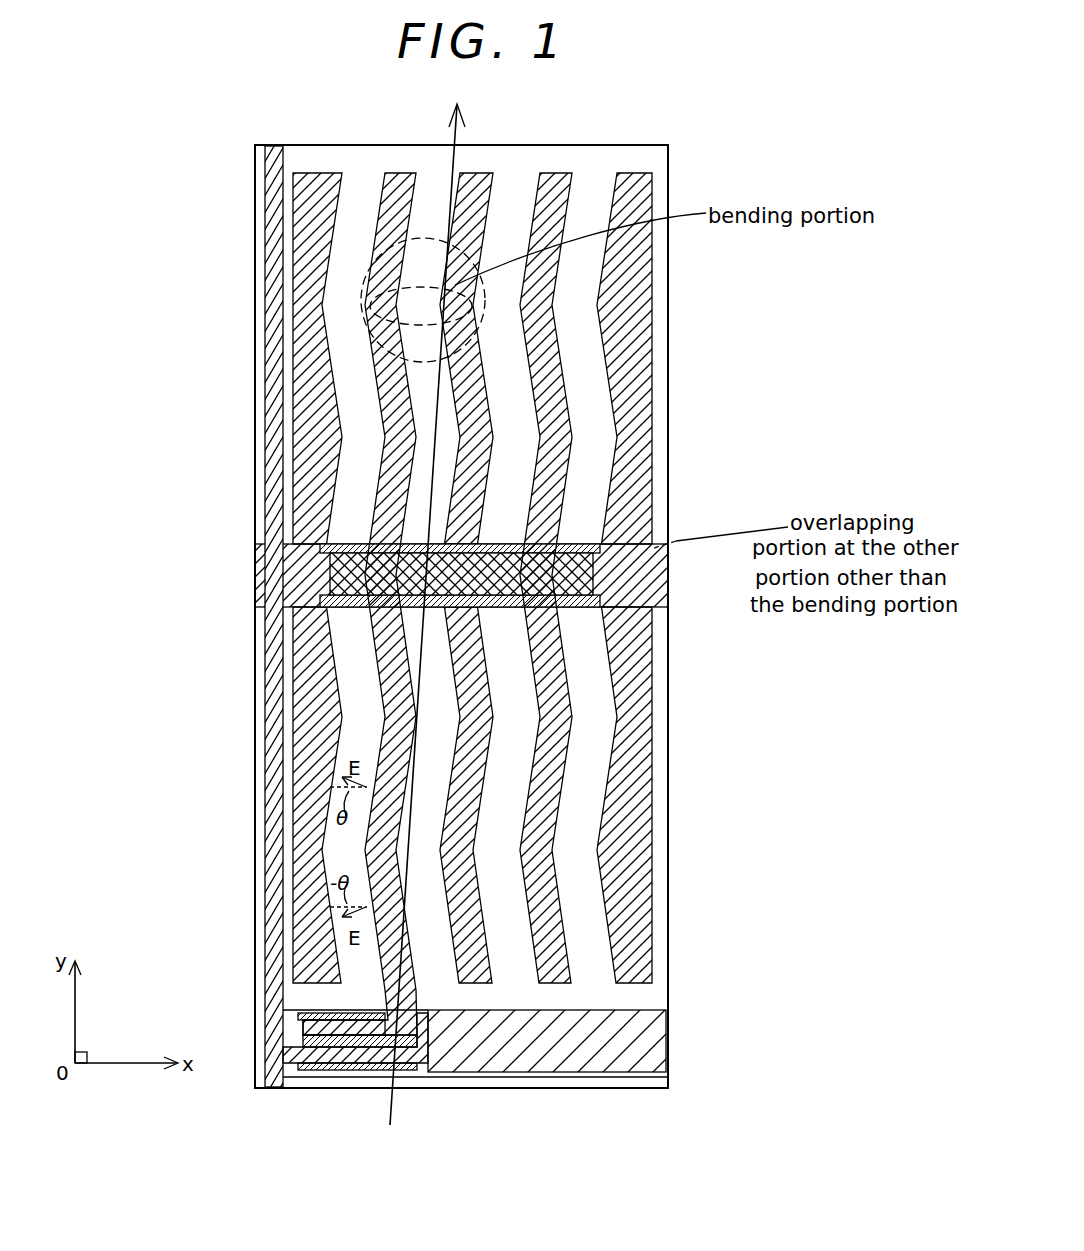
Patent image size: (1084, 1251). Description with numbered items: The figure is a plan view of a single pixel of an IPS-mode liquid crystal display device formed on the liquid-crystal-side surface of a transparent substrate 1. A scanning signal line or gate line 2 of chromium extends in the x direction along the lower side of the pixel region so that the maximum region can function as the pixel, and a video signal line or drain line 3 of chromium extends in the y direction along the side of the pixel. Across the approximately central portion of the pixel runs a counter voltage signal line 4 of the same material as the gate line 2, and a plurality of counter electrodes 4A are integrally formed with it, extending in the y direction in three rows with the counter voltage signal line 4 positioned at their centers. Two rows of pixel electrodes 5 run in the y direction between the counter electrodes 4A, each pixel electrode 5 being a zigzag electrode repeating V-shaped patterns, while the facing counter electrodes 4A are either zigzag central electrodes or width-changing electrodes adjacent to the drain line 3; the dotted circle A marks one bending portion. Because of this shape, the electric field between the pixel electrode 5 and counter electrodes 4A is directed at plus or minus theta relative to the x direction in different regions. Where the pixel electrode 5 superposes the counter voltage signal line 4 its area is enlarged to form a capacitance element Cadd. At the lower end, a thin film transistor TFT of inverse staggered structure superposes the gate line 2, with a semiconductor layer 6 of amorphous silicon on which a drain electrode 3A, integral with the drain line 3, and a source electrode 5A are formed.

The transparent substrate 1 is at (671, 992).
The scanning signal line (gate line) 2 is at (650, 1035).
The video signal line (drain line) 3 is at (267, 784).
The drain electrode 3A is at (306, 1071).
The counter voltage signal line 4 is at (516, 536).
The counter electrode 4A is at (313, 352).
The pixel electrode 5 is at (390, 662).
The source electrode 5A is at (320, 1022).
The semiconductor layer 6 is at (422, 1073).
The dotted circle A is at (433, 300).
The capacitance element Cadd is at (572, 531).
The thin film transistor TFT is at (355, 1078).